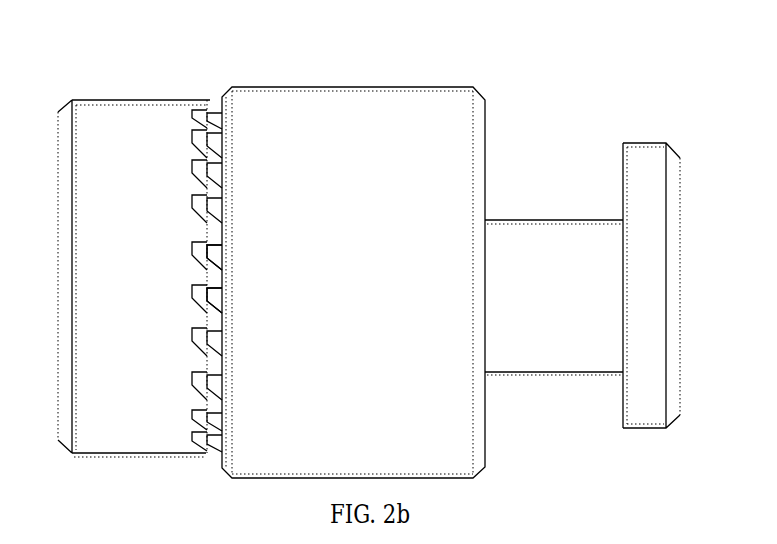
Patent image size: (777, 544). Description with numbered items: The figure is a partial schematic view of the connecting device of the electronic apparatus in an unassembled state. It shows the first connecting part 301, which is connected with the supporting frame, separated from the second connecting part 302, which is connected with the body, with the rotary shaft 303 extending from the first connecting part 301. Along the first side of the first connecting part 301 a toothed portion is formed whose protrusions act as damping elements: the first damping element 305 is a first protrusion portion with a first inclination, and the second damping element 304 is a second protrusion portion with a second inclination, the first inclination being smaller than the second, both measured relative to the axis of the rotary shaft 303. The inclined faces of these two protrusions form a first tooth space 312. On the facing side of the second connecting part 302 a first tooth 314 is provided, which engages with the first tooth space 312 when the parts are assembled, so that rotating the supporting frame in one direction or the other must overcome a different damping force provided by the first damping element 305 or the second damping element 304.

The first connecting part 301 is at (338, 133).
The second connecting part 302 is at (112, 117).
The rotary shaft 303 is at (525, 248).
The second damping element 304 is at (220, 210).
The first damping element 305 is at (214, 292).
The first tooth space 312 is at (213, 228).
The first tooth 314 is at (203, 225).